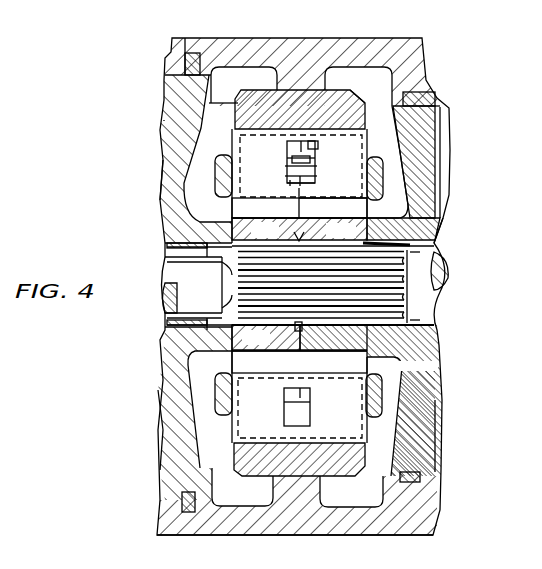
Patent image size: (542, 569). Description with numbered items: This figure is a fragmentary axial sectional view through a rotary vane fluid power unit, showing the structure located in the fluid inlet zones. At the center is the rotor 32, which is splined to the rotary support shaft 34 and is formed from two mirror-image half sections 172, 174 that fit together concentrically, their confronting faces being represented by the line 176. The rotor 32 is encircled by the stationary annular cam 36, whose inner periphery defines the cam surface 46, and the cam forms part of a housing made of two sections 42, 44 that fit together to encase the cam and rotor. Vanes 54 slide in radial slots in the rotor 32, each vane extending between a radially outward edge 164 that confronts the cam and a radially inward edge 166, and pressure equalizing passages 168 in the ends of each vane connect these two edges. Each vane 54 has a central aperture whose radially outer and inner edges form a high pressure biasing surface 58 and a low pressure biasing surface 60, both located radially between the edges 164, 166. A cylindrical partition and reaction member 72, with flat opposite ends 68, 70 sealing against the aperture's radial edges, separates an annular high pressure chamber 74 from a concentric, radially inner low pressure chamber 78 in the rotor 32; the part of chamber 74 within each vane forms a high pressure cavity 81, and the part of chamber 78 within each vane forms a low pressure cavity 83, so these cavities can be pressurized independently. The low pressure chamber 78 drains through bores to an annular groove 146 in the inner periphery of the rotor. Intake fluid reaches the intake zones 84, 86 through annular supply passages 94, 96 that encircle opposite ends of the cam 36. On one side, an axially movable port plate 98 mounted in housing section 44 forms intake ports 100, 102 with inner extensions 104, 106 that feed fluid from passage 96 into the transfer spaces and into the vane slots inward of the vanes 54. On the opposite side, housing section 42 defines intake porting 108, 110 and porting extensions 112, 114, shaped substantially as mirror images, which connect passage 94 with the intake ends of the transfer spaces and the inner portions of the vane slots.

The rotor 32 is at (228, 229).
The rotary support shaft 34 is at (420, 303).
The annular cam 36 is at (247, 470).
The housing section 42 is at (176, 461).
The housing section 44 is at (297, 530).
The cam surface 46 is at (267, 128).
The vane 54 is at (342, 194).
The high pressure biasing surface 58 is at (313, 148).
The low pressure biasing surface 60 is at (290, 180).
The flat end of partition and reaction member 68 is at (285, 166).
The flat end of partition and reaction member 70 is at (305, 167).
The partition and reaction member 72 is at (306, 176).
The high pressure annular chamber 74 is at (292, 151).
The low pressure annular chamber 78 is at (300, 180).
The high pressure cavity 81 is at (318, 158).
The low pressure cavity 83 is at (290, 182).
The intake zone 84 is at (217, 362).
The intake zone 86 is at (217, 137).
The annular fluid supply passage 94 is at (250, 78).
The annular fluid supply passage 96 is at (361, 78).
The port plate 98 is at (394, 151).
The intake port 100 is at (395, 425).
The intake port 102 is at (394, 125).
The inner extension of intake port 104 is at (399, 373).
The inner extension of intake port 106 is at (350, 507).
The intake porting 108 is at (200, 429).
The intake porting 110 is at (210, 118).
The intake porting extension 112 is at (196, 391).
The intake porting extension 114 is at (198, 177).
The annular groove 146 is at (370, 232).
The radially outward edge of vane 164 is at (315, 128).
The radially inward edge of vane 166 is at (271, 199).
The pressure equalizing passage 168 is at (230, 147).
The rotor half section 172 is at (277, 237).
The rotor half section 174 is at (438, 232).
The line of confronting faces 176 is at (296, 335).